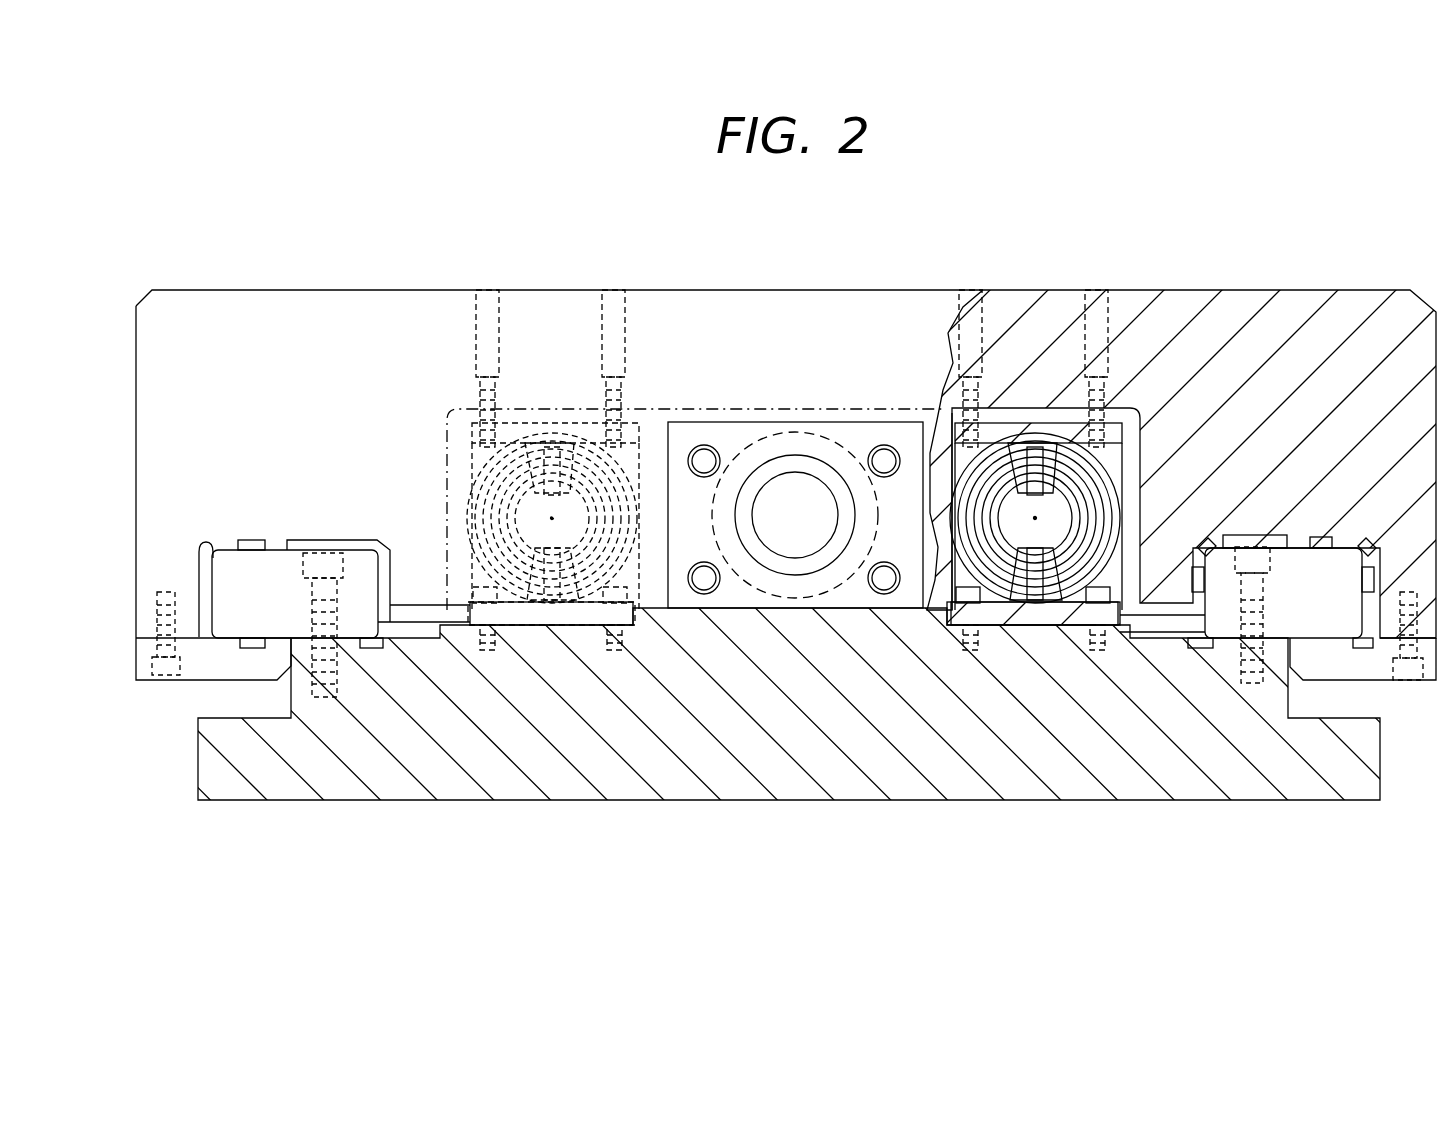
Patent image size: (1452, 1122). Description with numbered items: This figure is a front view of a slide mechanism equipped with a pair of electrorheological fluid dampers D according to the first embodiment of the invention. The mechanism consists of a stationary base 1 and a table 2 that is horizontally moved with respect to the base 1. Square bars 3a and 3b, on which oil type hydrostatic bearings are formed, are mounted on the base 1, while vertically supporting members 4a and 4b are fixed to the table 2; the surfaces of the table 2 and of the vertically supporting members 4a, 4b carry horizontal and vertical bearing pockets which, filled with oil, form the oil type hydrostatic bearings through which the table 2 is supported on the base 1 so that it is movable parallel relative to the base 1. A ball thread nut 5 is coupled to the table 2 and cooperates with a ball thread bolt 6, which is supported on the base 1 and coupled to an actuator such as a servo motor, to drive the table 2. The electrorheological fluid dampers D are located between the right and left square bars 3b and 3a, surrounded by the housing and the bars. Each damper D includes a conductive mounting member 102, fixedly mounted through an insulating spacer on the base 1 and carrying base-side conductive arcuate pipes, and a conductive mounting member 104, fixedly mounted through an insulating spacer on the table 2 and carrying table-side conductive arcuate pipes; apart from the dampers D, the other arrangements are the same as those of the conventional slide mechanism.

The base 1 is at (673, 768).
The table 2 is at (340, 316).
The square bar 3a is at (1300, 620).
The square bar 3b is at (272, 620).
The vertically supporting member 4a is at (1432, 663).
The vertically supporting member 4b is at (190, 660).
The ball thread nut 5 is at (740, 435).
The ball thread bolt 6 is at (828, 475).
The conductive mounting member 102 is at (517, 620).
The conductive mounting member 104 is at (580, 435).
The electrorheological fluid damper D is at (466, 473).